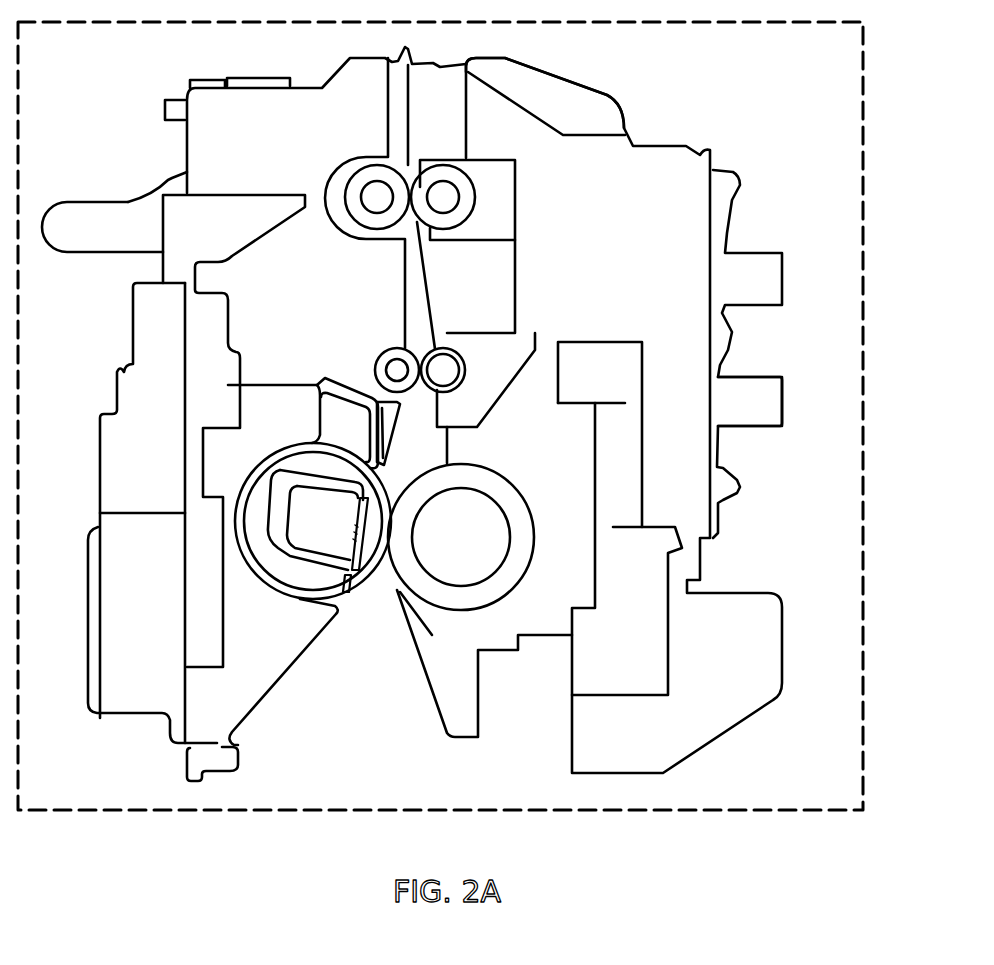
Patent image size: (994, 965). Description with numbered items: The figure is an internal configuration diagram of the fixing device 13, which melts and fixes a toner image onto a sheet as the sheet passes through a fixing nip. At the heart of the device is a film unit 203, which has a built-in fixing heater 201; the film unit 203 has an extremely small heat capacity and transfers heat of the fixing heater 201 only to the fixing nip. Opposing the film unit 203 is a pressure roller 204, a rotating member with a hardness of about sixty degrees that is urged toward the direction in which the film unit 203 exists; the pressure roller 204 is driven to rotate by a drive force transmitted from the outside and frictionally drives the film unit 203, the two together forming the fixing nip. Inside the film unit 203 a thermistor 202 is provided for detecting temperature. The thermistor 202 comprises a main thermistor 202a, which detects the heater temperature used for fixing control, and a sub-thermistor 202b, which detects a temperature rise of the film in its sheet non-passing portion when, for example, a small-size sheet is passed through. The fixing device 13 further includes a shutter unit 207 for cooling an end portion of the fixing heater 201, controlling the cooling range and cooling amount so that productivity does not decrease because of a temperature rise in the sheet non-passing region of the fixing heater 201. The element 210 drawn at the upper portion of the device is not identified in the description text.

The fixing device 13 is at (864, 252).
The fixing heater 201 is at (373, 490).
The thermistor 202 is at (340, 614).
The main thermistor 202a is at (358, 565).
The sub-thermistor 202b is at (345, 585).
The film unit 203 is at (292, 598).
The pressure roller 204 is at (482, 532).
The shutter unit 207 is at (763, 408).
The cover 210 is at (567, 102).